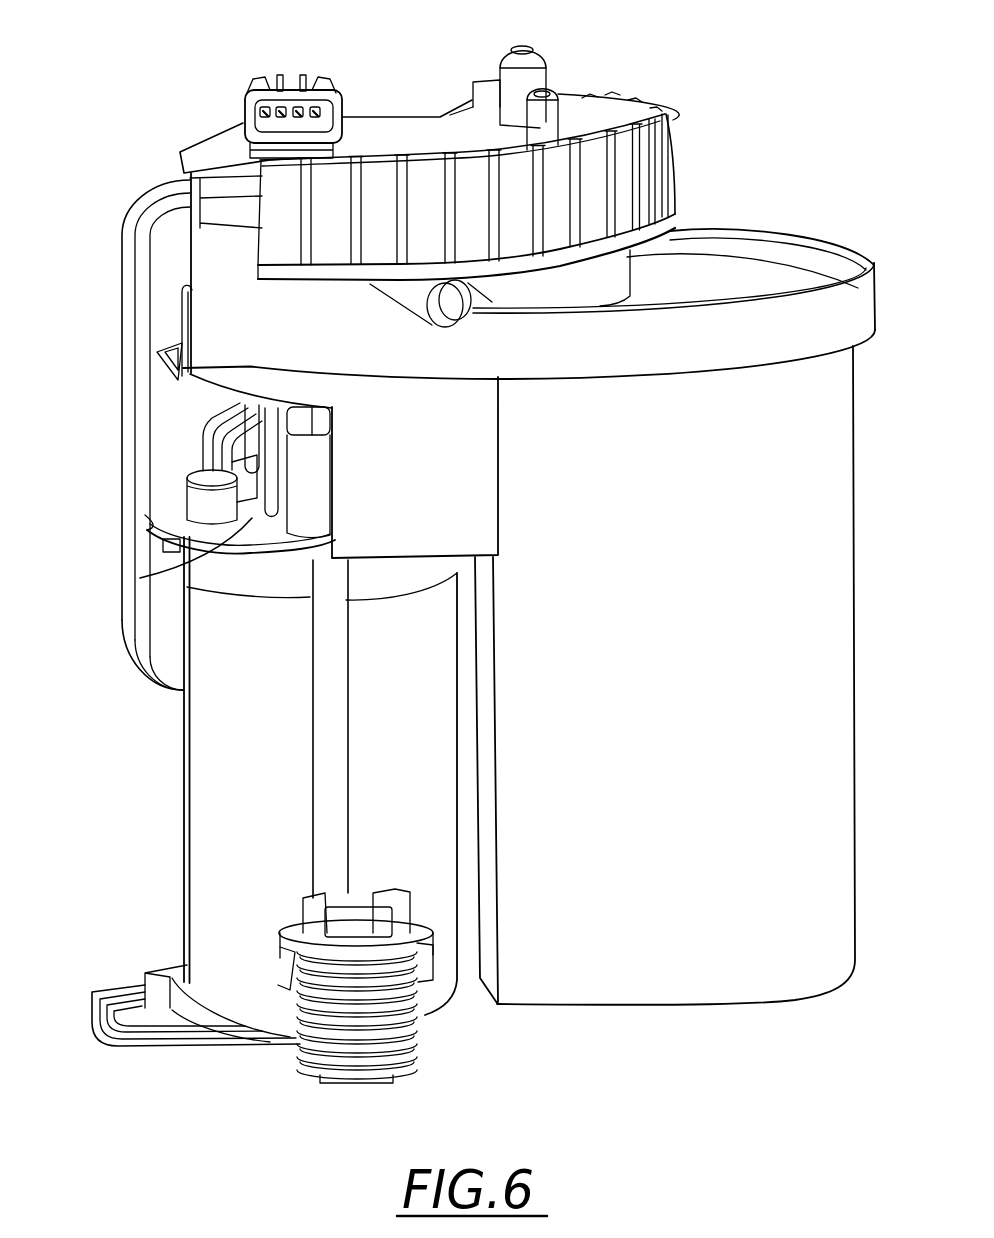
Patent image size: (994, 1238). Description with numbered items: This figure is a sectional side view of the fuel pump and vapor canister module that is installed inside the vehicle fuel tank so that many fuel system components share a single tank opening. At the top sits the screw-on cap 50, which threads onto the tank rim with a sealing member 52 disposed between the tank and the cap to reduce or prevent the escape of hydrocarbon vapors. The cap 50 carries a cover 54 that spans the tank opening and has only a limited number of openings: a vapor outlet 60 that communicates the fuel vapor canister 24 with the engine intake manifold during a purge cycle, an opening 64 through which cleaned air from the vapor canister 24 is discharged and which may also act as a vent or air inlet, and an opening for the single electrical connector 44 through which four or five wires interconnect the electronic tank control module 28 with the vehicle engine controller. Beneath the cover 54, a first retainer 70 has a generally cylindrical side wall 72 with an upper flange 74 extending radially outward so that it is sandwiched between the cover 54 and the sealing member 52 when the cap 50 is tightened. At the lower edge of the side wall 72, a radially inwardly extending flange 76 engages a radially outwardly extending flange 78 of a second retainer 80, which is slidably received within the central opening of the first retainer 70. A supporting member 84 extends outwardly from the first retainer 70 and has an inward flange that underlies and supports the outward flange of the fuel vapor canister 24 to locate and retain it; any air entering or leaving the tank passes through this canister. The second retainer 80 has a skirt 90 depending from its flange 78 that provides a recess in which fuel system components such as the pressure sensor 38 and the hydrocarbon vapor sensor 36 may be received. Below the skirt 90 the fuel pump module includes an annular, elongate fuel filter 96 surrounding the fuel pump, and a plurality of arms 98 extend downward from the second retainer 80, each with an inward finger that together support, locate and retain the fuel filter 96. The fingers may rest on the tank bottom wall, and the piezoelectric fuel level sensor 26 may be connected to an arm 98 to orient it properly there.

The fuel vapor canister 24 is at (850, 623).
The electronic fuel level sensor 26 is at (415, 1042).
The electronic tank control module 28 is at (163, 418).
The hydrocarbon vapor sensor 36 is at (140, 578).
The pressure sensor 38 is at (203, 503).
The electrical connector 44 is at (328, 97).
The screw-on cap 50 is at (665, 112).
The sealing member 52 is at (205, 200).
The cover 54 is at (387, 128).
The vapor outlet 60 is at (540, 52).
The opening 64 is at (560, 95).
The first retainer 70 is at (191, 243).
The side wall 72 is at (212, 272).
The upper flange 74 is at (183, 172).
The radially inwardly extending flange 76 is at (178, 379).
The radially outwardly extending flange 78 is at (181, 345).
The second retainer 80 is at (368, 533).
The supporting member 84 is at (783, 230).
The skirt 90 is at (456, 471).
The fuel filter 96 is at (197, 795).
The arms 98 is at (327, 712).